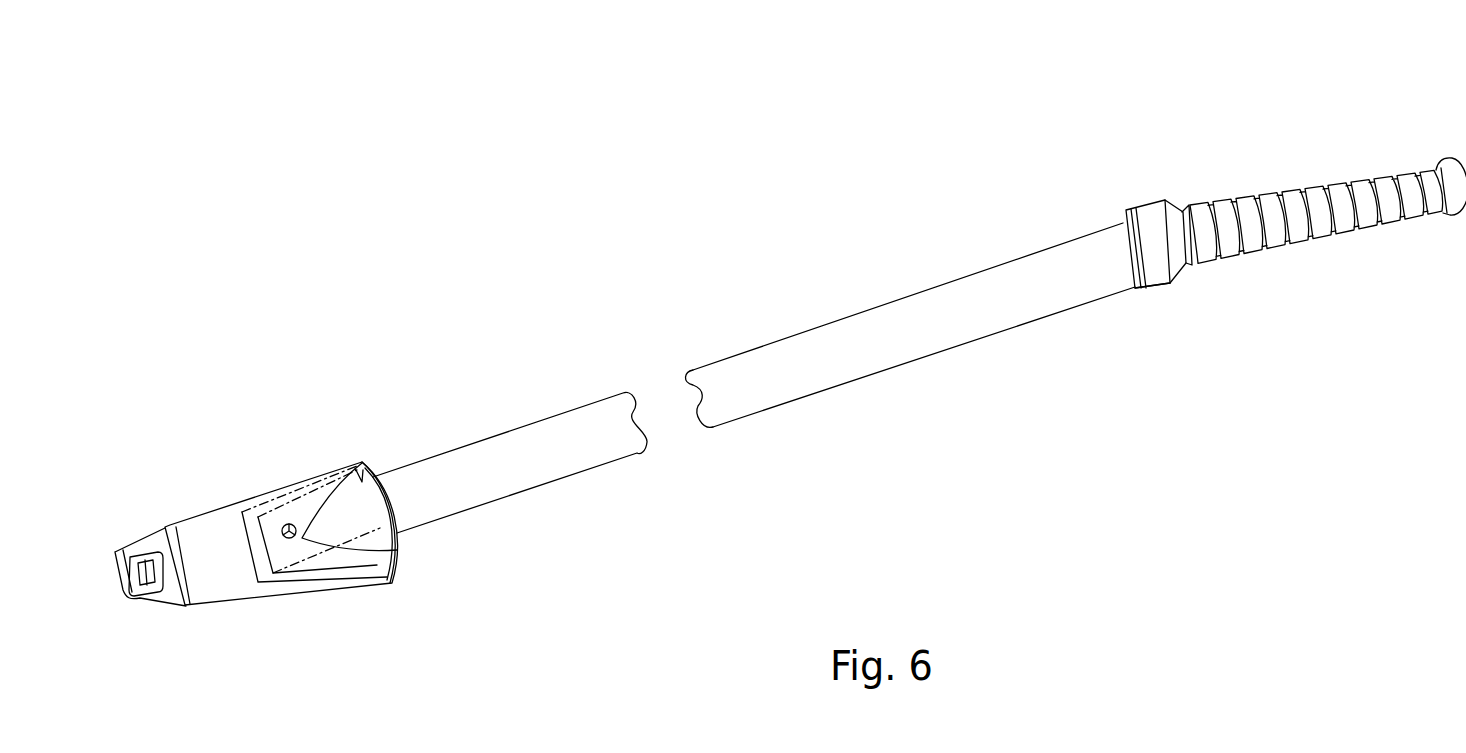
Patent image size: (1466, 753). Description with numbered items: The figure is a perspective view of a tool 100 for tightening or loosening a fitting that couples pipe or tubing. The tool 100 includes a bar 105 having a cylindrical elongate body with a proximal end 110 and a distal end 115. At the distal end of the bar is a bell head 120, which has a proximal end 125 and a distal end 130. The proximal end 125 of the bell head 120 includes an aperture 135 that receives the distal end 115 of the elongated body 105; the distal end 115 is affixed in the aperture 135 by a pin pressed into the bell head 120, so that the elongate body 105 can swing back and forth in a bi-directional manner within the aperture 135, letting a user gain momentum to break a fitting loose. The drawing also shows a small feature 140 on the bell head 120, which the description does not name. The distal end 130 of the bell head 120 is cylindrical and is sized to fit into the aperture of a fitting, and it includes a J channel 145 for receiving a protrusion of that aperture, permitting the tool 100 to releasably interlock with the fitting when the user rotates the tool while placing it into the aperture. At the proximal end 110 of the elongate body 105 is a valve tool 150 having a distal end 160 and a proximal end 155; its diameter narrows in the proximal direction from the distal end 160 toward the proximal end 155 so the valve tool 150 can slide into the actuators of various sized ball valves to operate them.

The tool 100 is at (692, 110).
The bar 105 is at (780, 380).
The proximal end 110 is at (1112, 265).
The distal end 115 is at (388, 487).
The bell head 120 is at (232, 460).
The proximal end 125 is at (393, 583).
The distal end 130 is at (117, 552).
The aperture 135 is at (278, 580).
The aperture 140 is at (290, 524).
The J channel 145 is at (128, 597).
The valve tool 150 is at (1308, 156).
The proximal end 155 is at (1462, 154).
The distal end 160 is at (1140, 300).